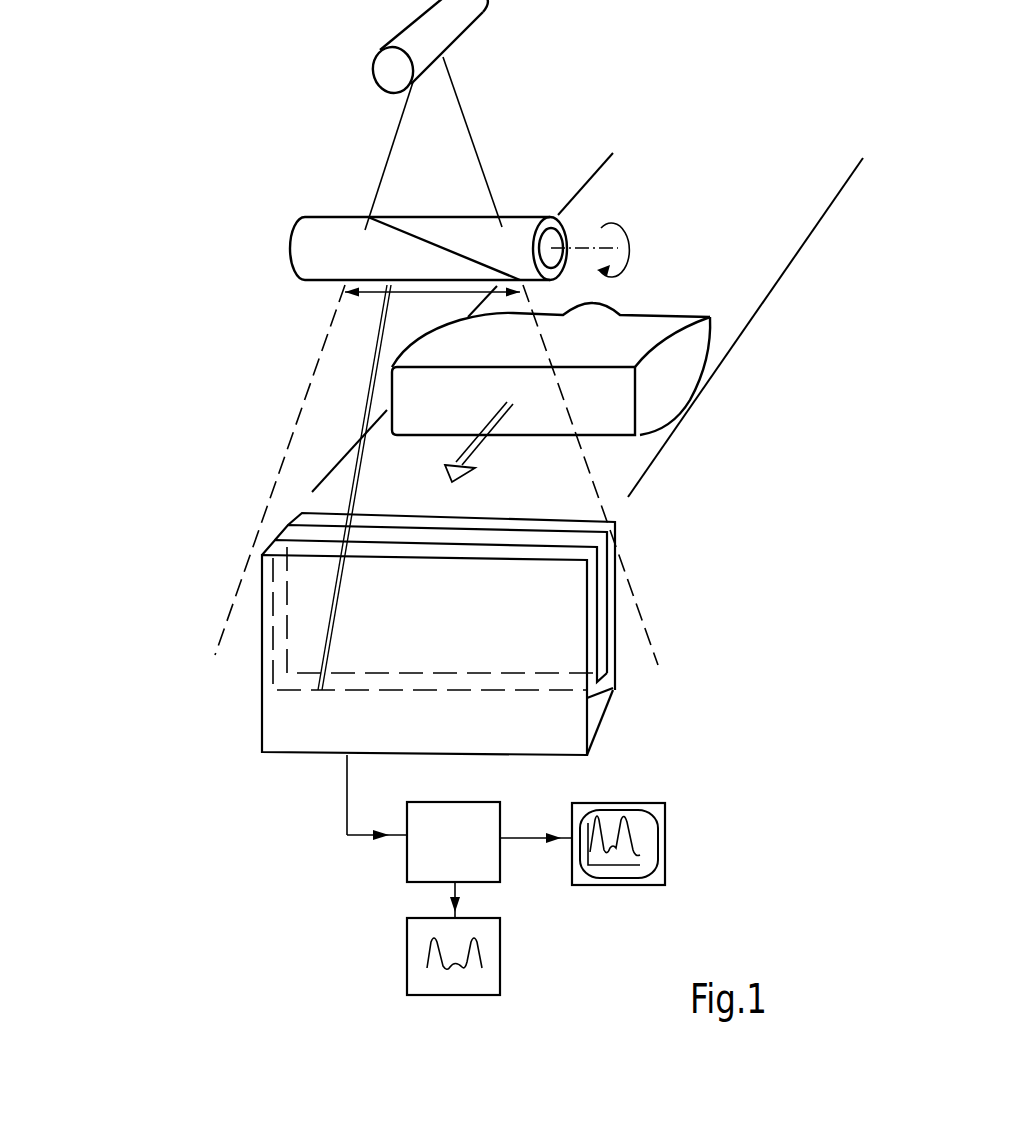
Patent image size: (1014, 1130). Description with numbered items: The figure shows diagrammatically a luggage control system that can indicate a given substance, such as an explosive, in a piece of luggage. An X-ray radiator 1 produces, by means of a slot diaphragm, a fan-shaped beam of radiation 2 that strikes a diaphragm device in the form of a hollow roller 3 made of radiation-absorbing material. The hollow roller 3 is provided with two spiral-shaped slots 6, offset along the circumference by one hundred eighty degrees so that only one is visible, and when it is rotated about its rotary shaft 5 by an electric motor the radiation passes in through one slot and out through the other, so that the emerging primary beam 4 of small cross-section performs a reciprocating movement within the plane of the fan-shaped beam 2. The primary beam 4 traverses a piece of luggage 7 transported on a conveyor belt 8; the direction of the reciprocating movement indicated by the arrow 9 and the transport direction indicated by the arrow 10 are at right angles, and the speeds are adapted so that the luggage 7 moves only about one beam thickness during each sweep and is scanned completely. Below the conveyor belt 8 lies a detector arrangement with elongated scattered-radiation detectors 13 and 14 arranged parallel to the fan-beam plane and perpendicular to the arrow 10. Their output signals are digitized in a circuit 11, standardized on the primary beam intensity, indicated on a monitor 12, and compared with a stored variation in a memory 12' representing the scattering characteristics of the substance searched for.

The X-ray radiator 1 is at (411, 40).
The fan-shaped beam of radiation 2 is at (470, 128).
The hollow roller 3 is at (527, 217).
The primary beam 4 is at (368, 377).
The rotary shaft 5 is at (588, 254).
The spiral-shaped slots 6 is at (415, 230).
The piece of luggage 7 is at (660, 392).
The conveyor belt 8 is at (786, 272).
The arrow indicating reciprocating movement 9 is at (366, 294).
The arrow indicating transport direction 10 is at (478, 450).
The circuit 11 is at (445, 802).
The monitor 12 is at (637, 844).
The memory 12' is at (475, 956).
The detector 13 is at (604, 712).
The detector 14 is at (607, 672).